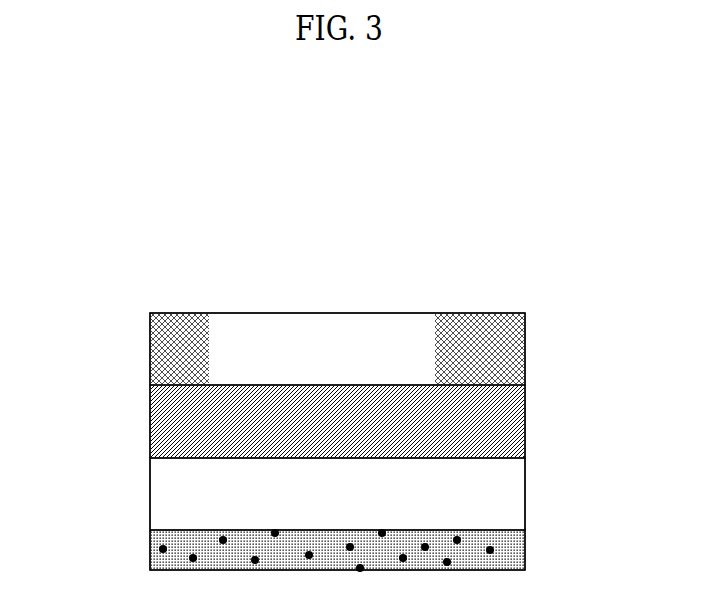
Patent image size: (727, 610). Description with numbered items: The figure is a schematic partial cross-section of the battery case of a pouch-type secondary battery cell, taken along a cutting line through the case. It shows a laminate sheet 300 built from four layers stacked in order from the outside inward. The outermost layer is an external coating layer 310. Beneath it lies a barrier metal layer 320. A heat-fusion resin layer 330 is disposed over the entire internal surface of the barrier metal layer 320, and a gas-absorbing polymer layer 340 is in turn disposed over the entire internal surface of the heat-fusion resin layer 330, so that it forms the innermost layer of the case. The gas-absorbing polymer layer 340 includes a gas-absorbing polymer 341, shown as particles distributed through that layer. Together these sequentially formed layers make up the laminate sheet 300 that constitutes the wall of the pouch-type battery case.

The laminate sheet 300 is at (207, 265).
The external coating layer 310 is at (503, 337).
The barrier metal layer 320 is at (505, 415).
The heat-fusion resin layer 330 is at (502, 490).
The gas-absorbing polymer layer 340 is at (503, 560).
The gas-absorbing polymer 341 is at (150, 543).